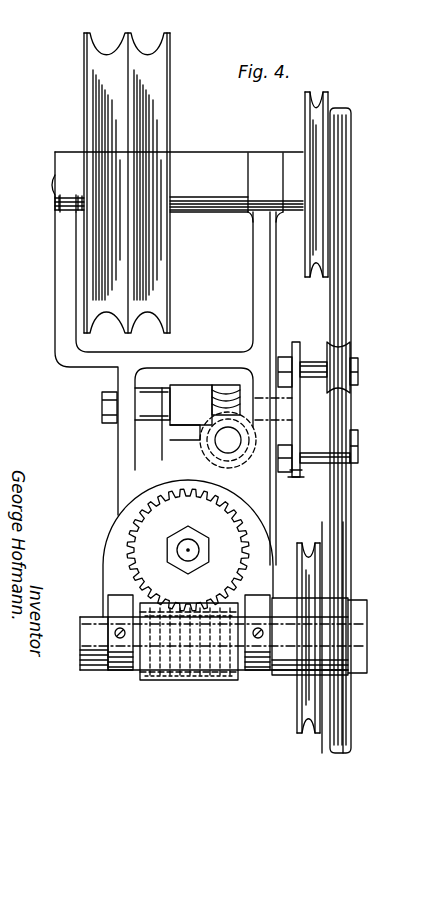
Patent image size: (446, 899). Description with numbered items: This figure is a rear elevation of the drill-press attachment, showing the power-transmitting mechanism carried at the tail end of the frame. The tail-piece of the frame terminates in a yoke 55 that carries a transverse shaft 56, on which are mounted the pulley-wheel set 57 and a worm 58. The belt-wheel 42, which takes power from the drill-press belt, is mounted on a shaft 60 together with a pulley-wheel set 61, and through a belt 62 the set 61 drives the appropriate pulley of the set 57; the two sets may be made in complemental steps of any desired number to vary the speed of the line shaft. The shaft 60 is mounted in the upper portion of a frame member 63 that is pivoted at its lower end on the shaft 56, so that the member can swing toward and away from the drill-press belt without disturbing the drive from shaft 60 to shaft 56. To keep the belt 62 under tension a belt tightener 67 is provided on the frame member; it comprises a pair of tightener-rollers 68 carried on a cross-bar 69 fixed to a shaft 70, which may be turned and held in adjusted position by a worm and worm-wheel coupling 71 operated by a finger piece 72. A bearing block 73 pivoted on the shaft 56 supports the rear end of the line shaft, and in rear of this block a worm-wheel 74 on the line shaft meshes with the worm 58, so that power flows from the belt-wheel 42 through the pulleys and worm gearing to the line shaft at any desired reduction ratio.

The belt-wheel 42 is at (160, 275).
The yoke 55 is at (256, 674).
The transverse shaft 56 is at (367, 637).
The pulley-wheel set 57 is at (323, 580).
The worm 58 is at (158, 617).
The shaft 60 is at (50, 186).
The pulley-wheel set 61 is at (322, 105).
The belt 62 is at (323, 306).
The frame member 63 is at (98, 362).
The belt tightener 67 is at (308, 470).
The tightener-rollers 68 is at (358, 372).
The cross-bar 69 is at (300, 412).
The shaft 70 is at (158, 408).
The worm and worm-wheel coupling 71 is at (228, 386).
The finger piece 72 is at (228, 446).
The bearing block 73 is at (170, 678).
The worm-wheel 74 is at (150, 530).